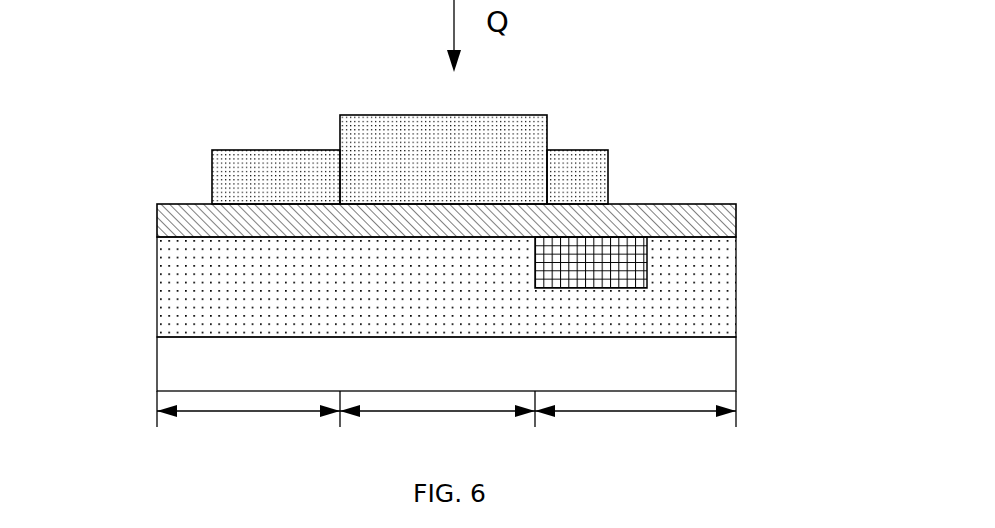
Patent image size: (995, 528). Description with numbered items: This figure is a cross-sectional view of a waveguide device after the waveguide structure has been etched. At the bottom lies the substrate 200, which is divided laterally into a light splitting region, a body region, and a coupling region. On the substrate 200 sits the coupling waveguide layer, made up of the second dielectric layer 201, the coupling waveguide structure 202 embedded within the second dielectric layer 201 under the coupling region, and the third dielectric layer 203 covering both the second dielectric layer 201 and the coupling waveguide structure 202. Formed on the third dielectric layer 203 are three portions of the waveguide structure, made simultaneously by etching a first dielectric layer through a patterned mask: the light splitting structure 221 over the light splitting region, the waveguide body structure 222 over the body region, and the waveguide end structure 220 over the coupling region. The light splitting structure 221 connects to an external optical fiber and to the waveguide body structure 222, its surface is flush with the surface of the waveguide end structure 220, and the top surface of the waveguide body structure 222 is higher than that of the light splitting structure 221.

The substrate 200 is at (713, 379).
The second dielectric layer 201 is at (178, 302).
The coupling waveguide structure 202 is at (630, 260).
The third dielectric layer 203 is at (702, 226).
The waveguide end structure 220 is at (592, 172).
The light splitting structure 221 is at (222, 163).
The waveguide body structure 222 is at (423, 143).